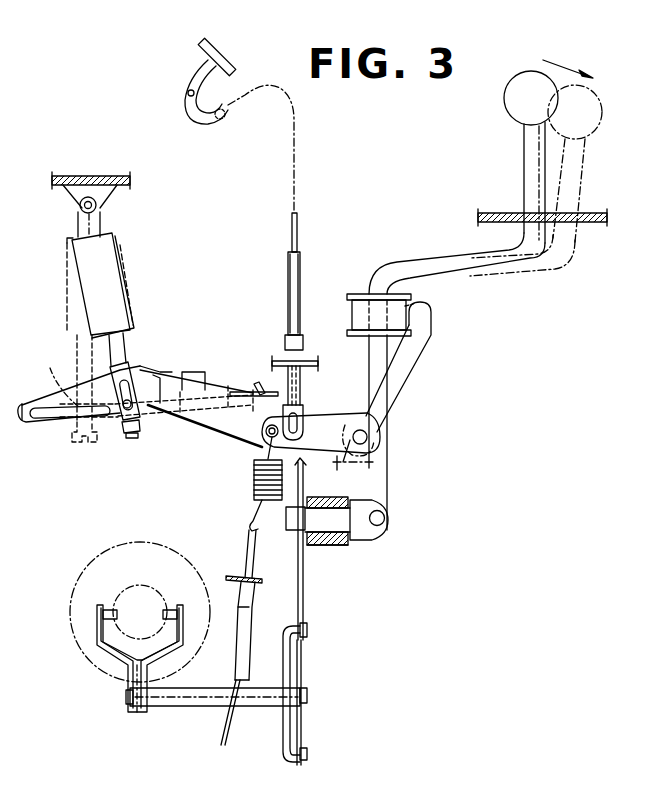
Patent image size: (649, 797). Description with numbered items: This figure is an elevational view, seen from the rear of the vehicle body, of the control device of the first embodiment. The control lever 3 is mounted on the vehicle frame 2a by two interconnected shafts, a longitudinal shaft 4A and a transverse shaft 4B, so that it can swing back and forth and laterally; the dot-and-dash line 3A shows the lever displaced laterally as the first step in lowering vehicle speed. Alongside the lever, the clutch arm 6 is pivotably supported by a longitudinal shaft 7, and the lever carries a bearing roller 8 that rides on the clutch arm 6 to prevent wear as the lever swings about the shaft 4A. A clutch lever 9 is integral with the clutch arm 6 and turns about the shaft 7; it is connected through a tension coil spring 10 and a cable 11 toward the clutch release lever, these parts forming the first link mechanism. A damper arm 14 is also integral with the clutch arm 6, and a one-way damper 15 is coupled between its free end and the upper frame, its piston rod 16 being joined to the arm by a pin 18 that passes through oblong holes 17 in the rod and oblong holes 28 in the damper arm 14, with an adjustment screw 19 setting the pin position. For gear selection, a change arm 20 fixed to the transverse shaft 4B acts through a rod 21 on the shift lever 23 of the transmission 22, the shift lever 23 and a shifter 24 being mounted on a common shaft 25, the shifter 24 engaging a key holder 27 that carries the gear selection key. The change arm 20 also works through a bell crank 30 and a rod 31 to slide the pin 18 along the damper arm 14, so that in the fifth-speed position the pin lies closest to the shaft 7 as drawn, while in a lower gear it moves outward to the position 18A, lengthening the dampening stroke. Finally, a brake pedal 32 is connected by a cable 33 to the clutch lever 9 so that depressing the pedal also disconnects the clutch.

The vehicle frame 2a is at (122, 172).
The control lever 3 is at (524, 160).
The laterally displaced control lever position 3A is at (572, 162).
The longitudinal shaft 4A is at (385, 520).
The transverse shaft 4B is at (343, 548).
The clutch arm 6 is at (424, 342).
The longitudinal shaft 7 is at (381, 436).
The bearing roller 8 is at (358, 317).
The clutch lever 9 is at (322, 430).
The tension coil spring 10 is at (256, 482).
The cable 11 is at (230, 728).
The damper arm 14 is at (208, 424).
The one-way damper 15 is at (120, 283).
The piston rod 16 is at (126, 343).
The oblong holes 17 is at (140, 382).
The pin 18 is at (106, 420).
The shifted pin position 18A is at (56, 376).
The adjustment screw 19 is at (134, 438).
The change arm 20 is at (304, 606).
The rod 21 is at (302, 654).
The transmission 22 is at (98, 552).
The shift lever 23 is at (302, 722).
The shifter 24 is at (112, 652).
The shaft 25 is at (186, 708).
The key holder 27 is at (150, 590).
The oblong holes 28 is at (58, 420).
The bell crank 30 is at (246, 390).
The rod 31 is at (175, 406).
The brake pedal 32 is at (190, 77).
The cable 33 is at (300, 228).